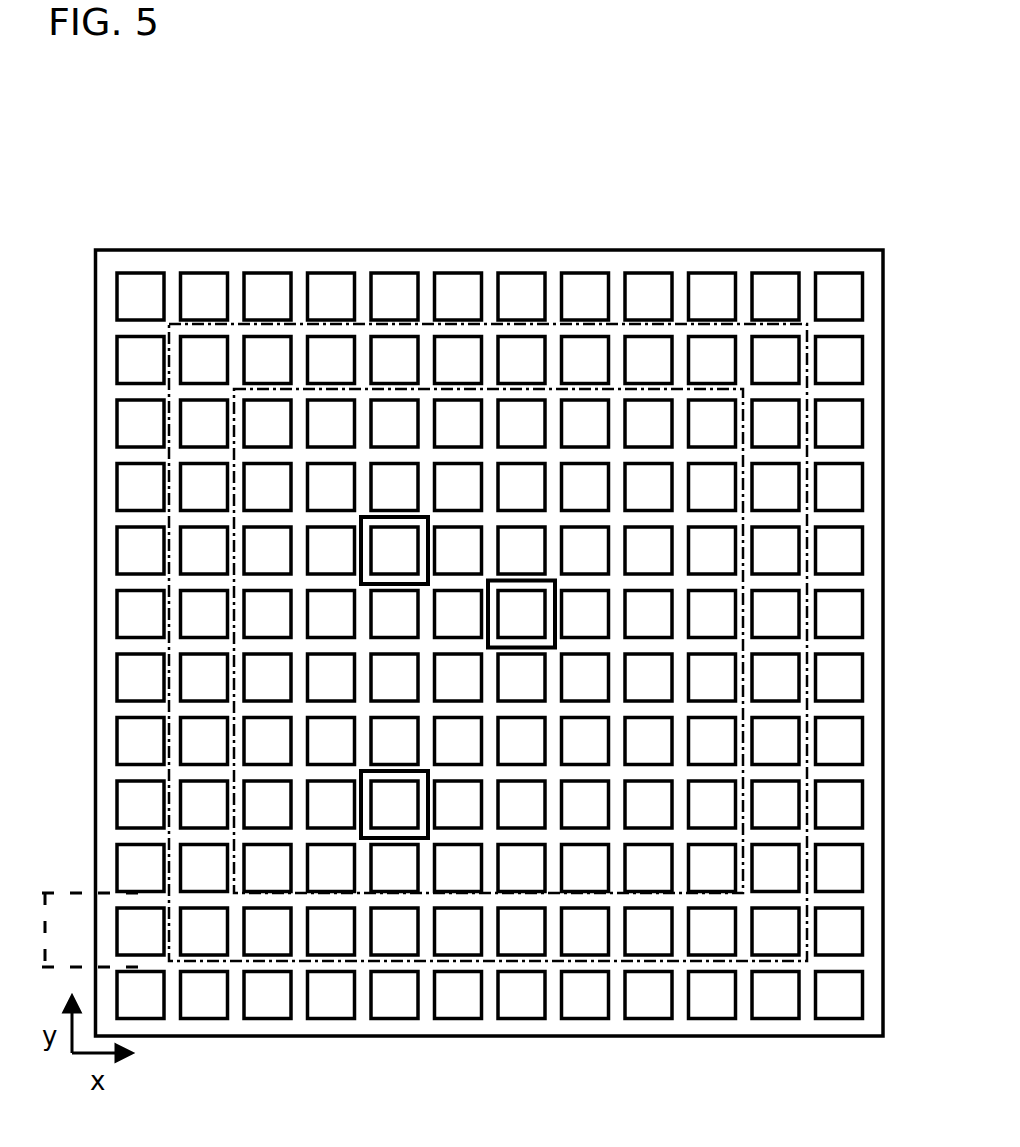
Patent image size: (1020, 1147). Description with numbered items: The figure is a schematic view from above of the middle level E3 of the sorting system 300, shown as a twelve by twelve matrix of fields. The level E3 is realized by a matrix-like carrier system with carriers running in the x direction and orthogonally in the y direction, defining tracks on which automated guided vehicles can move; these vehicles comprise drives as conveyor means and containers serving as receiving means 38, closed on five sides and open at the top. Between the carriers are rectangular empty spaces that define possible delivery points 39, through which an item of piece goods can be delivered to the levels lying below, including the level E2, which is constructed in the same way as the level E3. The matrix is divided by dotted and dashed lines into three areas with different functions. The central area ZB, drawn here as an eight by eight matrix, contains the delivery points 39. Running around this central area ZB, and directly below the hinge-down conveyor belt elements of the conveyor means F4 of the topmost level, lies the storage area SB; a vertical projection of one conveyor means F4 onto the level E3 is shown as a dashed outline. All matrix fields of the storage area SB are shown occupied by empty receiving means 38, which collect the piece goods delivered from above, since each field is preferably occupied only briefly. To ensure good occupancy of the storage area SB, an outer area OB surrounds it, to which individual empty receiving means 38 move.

The receiving means 38 is at (378, 535).
The delivery points 39 is at (490, 646).
The sorting system 300 is at (847, 61).
The central area ZB is at (553, 460).
The storage area SB is at (743, 935).
The outer area OB is at (808, 295).
The conveyor means F4 is at (47, 893).
The level E2 is at (366, 136).
The level E3 is at (400, 74).